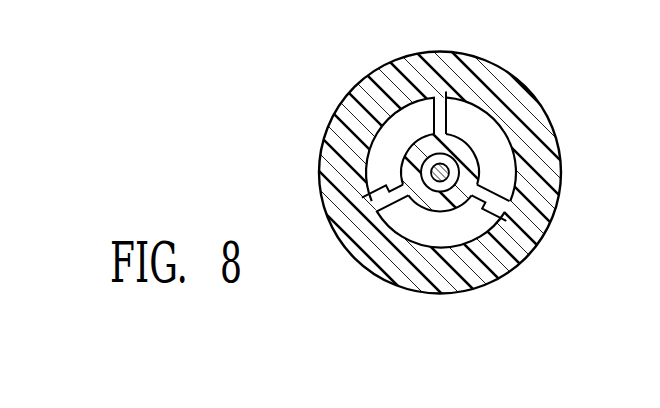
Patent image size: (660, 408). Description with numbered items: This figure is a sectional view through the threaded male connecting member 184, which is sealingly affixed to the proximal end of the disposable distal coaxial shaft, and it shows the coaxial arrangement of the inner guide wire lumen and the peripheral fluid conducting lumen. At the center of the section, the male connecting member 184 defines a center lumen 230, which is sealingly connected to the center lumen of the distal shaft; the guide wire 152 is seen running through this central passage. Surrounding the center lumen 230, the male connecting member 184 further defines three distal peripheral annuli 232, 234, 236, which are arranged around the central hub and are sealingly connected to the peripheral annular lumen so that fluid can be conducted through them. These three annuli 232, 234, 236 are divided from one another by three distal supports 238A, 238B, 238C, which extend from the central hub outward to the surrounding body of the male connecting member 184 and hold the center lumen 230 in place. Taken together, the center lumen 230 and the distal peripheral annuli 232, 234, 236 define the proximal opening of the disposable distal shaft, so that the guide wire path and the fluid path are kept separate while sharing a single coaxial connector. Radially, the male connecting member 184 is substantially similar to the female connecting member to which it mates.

The guide wire 152 is at (438, 178).
The male connecting member 184 is at (540, 104).
The center lumen 230 is at (448, 182).
The distal peripheral annulus 232 is at (388, 138).
The distal peripheral annulus 234 is at (457, 118).
The distal peripheral annulus 236 is at (400, 221).
The distal support 238A is at (432, 97).
The distal support 238B is at (503, 195).
The distal support 238C is at (383, 195).